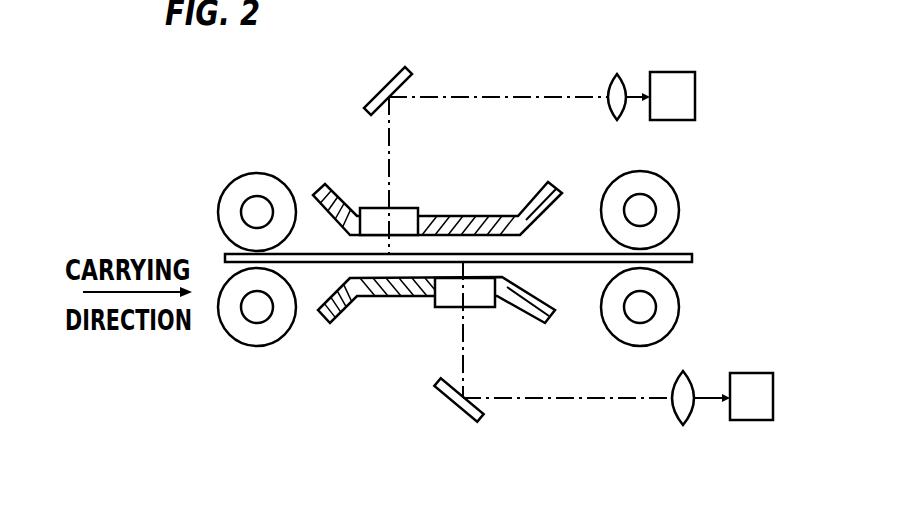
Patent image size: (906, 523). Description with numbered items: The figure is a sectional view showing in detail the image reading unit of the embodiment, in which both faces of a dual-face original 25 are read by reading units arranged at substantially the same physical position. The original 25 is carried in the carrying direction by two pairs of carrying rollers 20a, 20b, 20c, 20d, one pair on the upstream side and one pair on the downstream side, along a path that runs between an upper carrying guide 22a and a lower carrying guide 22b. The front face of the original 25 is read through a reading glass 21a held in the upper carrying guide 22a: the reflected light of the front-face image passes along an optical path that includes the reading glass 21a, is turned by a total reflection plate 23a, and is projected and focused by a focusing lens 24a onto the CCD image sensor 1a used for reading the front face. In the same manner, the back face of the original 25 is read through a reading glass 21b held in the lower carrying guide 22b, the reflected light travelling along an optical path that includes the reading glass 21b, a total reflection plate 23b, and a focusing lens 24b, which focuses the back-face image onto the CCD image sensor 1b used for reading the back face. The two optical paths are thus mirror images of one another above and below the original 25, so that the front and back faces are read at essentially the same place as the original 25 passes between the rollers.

The CCD image sensor 1a is at (703, 82).
The CCD image sensor 1b is at (780, 393).
The carrying roller 20a is at (266, 188).
The carrying roller 20b is at (257, 340).
The carrying roller 20c is at (668, 195).
The carrying roller 20d is at (670, 315).
The reading glass 21a is at (404, 188).
The reading glass 21b is at (481, 331).
The carrying guide 22a is at (437, 182).
The carrying guide 22b is at (436, 320).
The total reflection plate 23a is at (423, 79).
The total reflection plate 23b is at (464, 431).
The focusing lens 24a is at (636, 76).
The focusing lens 24b is at (701, 428).
The dual-face original 25 is at (458, 298).